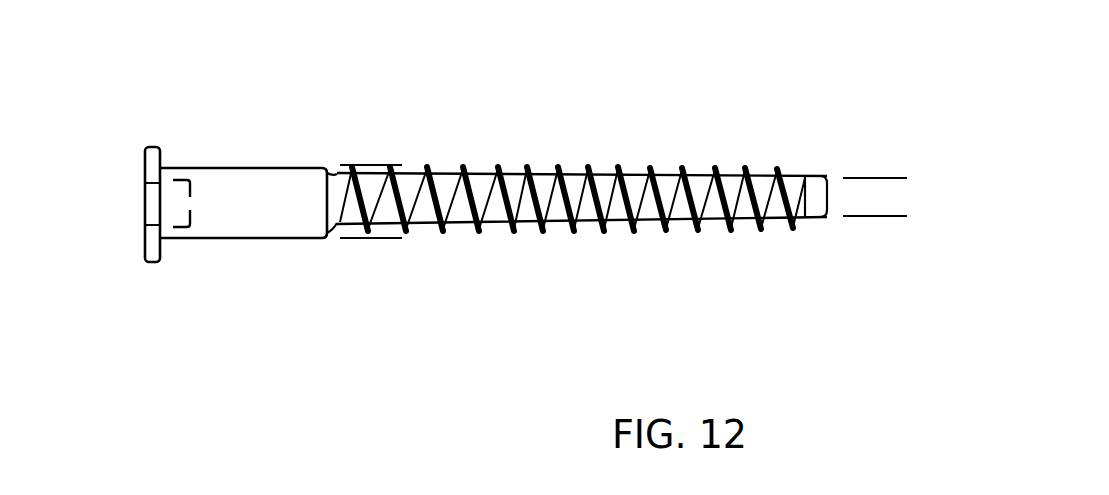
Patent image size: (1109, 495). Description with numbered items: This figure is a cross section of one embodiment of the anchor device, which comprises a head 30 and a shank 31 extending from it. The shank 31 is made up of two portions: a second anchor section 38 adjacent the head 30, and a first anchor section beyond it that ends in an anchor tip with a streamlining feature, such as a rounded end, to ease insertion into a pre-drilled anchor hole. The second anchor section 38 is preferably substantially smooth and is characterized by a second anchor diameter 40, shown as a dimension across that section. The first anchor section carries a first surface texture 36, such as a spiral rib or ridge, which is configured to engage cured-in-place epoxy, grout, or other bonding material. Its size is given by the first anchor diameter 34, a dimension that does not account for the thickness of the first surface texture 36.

The head 30 is at (161, 154).
The shank 31 is at (592, 107).
The first anchor diameter 34 is at (883, 250).
The first surface texture 36 is at (542, 226).
The second anchor section 38 is at (222, 212).
The second anchor diameter 40 is at (385, 270).